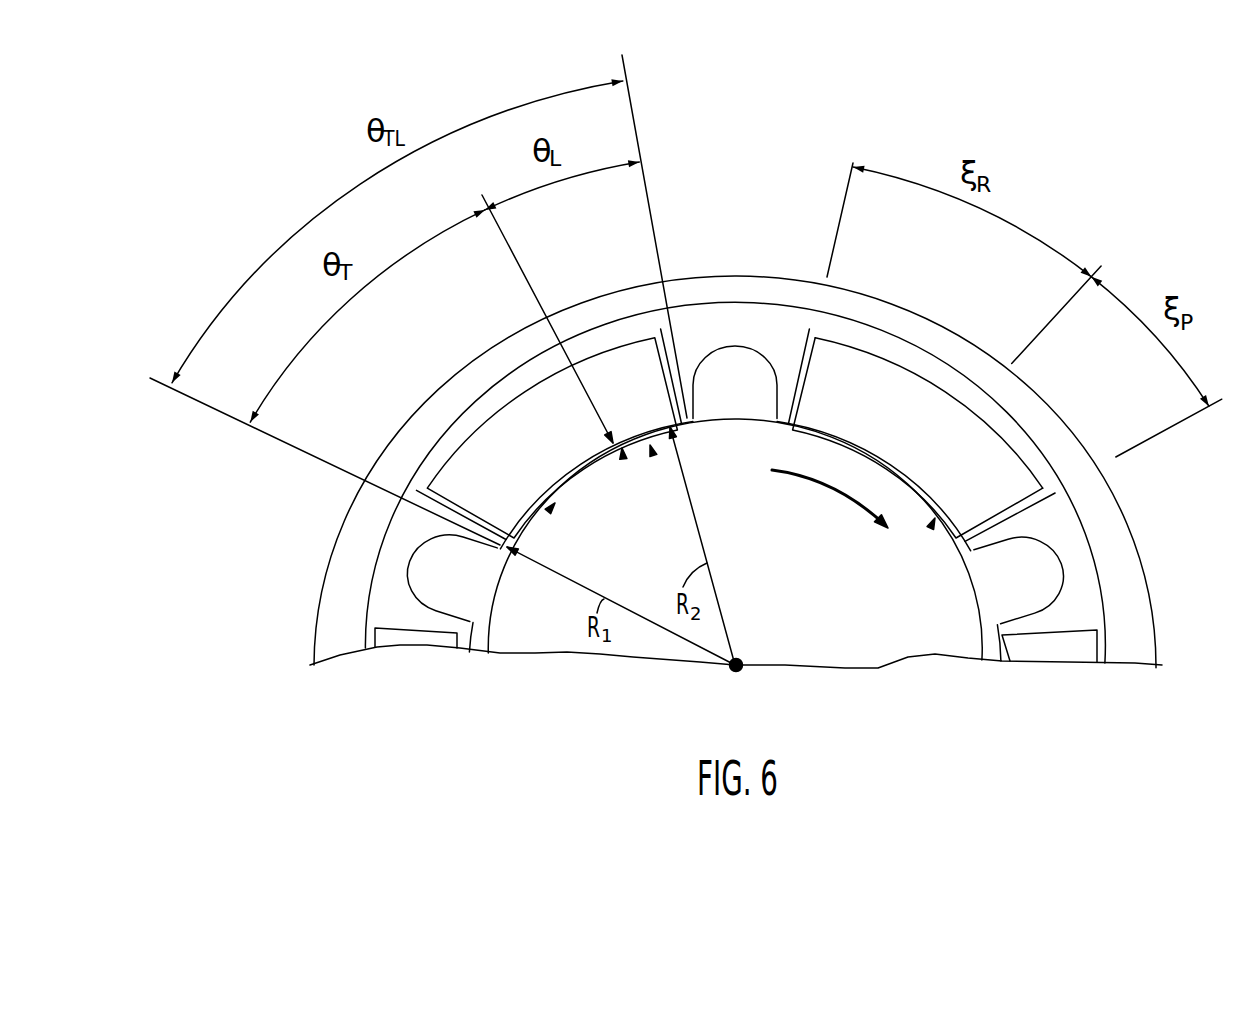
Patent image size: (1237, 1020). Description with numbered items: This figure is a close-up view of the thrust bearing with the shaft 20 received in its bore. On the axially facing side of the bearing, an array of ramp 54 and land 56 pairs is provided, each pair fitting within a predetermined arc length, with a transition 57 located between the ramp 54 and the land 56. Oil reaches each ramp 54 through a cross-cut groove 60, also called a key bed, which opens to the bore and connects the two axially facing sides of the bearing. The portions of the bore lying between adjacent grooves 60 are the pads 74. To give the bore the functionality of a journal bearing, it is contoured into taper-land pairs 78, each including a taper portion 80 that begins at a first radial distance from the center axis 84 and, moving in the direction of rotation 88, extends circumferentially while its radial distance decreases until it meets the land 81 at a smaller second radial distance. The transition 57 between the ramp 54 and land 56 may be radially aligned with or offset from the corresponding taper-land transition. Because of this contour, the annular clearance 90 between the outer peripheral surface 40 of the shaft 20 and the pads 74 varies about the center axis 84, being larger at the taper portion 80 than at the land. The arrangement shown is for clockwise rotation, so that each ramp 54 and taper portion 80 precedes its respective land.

The shaft 20 is at (797, 588).
The outer peripheral surface 40 is at (495, 615).
The ramp 54 is at (863, 378).
The land 56 is at (995, 458).
The transition 57 is at (965, 412).
The groove 60 is at (753, 367).
The pad 74 is at (935, 518).
The taper-land pair 78 is at (699, 452).
The taper portion 80 is at (556, 503).
The land 81 is at (650, 445).
The center axis 84 is at (738, 672).
The direction of rotation 88 is at (838, 494).
The annular clearance 90 is at (587, 470).